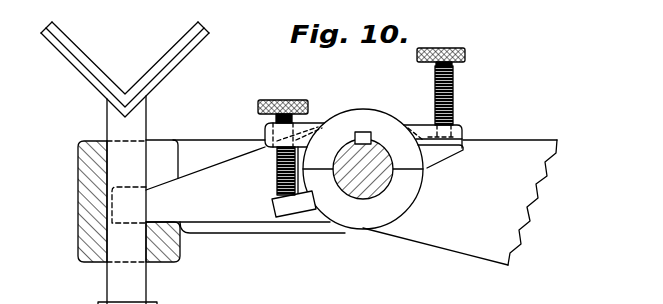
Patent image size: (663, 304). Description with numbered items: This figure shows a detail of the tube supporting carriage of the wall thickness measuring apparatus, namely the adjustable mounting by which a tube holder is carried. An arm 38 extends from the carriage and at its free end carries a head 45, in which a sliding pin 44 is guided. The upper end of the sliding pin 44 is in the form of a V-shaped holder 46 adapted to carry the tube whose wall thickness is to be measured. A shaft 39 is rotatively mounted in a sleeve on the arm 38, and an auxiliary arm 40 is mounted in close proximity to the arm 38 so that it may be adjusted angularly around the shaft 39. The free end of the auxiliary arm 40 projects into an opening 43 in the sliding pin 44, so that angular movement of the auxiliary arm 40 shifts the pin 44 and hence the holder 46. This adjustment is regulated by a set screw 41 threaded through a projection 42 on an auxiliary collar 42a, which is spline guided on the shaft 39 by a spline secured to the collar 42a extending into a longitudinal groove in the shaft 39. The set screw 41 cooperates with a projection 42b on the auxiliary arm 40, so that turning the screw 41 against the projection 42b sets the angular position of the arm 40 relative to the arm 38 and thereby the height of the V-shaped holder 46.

The arm 38 is at (193, 146).
The shaft 39 is at (385, 136).
The auxiliary arm 40 is at (227, 172).
The set screw 41 is at (281, 99).
The projection 42 is at (259, 120).
The auxiliary collar 42a is at (322, 173).
The projection 42b is at (295, 207).
The opening 43 is at (110, 228).
The sliding pin 44 is at (114, 279).
The head 45 is at (78, 160).
The V-shaped holder 46 is at (157, 62).